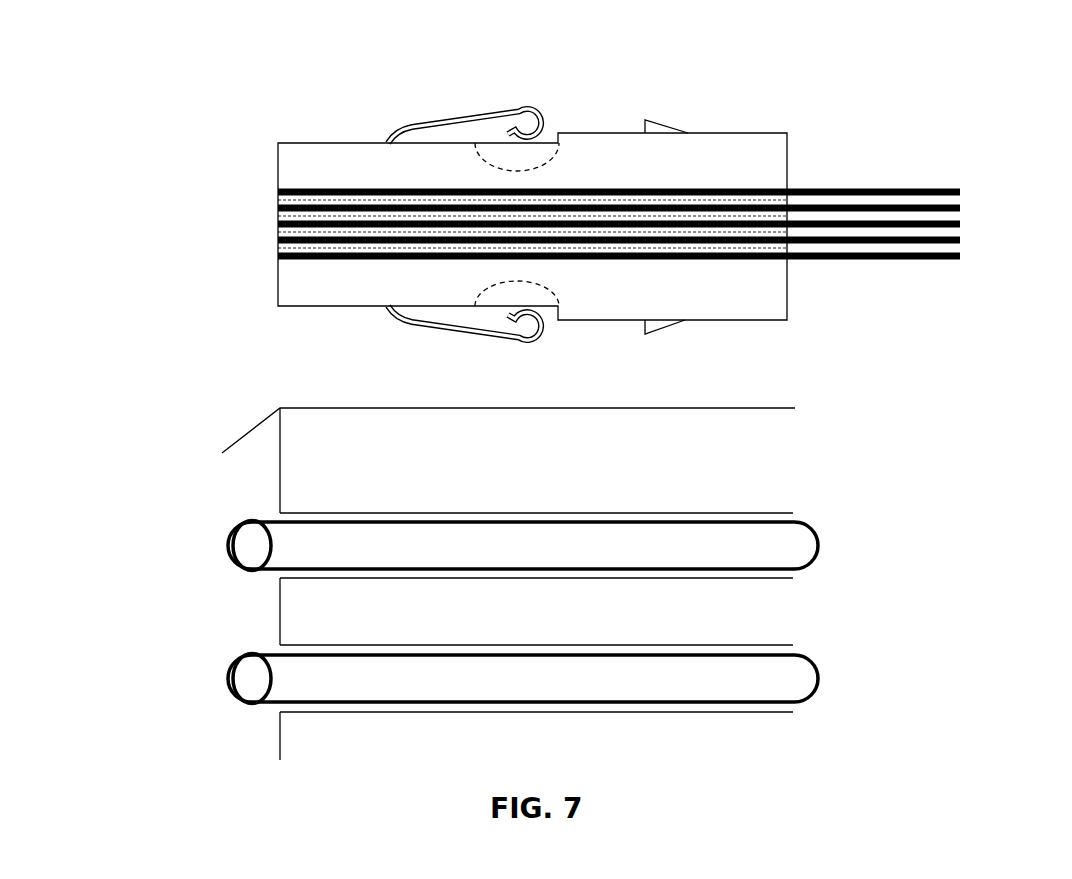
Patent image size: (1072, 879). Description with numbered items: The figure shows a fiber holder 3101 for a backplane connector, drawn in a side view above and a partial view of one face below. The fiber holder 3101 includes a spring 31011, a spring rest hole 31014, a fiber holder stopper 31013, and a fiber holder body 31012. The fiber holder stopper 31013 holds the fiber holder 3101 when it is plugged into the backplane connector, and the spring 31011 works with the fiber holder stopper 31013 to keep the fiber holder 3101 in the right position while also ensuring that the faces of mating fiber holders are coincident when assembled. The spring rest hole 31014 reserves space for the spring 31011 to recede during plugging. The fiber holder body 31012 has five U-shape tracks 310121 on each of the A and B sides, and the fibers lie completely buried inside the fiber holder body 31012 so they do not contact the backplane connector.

The fiber holder 3101 is at (544, 392).
The spring 31011 is at (470, 112).
The fiber holder body 31012 is at (273, 289).
The fiber holder stopper 31013 is at (668, 116).
The spring rest hole 31014 is at (541, 155).
The U-shape track 310121 is at (237, 569).